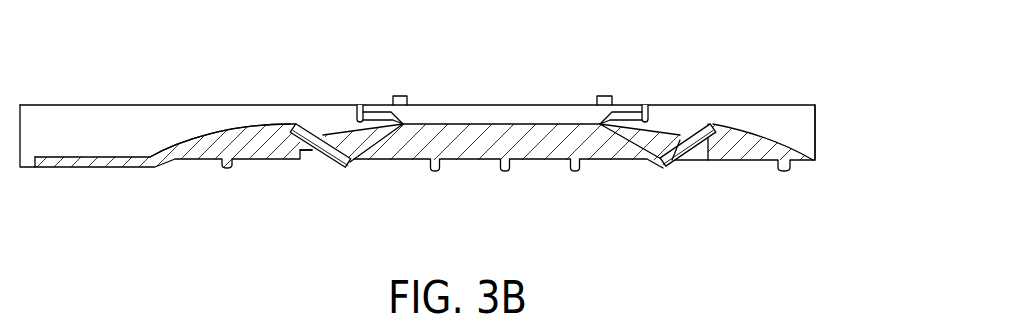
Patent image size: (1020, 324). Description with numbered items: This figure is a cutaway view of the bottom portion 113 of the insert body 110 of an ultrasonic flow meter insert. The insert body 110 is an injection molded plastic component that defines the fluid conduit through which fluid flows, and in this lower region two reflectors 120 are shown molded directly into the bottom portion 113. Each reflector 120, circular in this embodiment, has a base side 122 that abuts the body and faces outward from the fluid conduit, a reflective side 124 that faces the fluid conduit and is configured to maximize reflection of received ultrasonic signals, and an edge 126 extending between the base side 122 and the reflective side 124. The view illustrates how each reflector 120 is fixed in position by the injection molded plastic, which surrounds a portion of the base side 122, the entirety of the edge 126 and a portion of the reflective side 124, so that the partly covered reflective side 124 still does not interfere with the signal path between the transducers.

The insert body 110 is at (468, 105).
The bottom portion 113 is at (817, 110).
The reflector 120 is at (295, 126).
The base side 122 is at (312, 153).
The reflective side 124 is at (325, 136).
The edge 126 is at (290, 123).